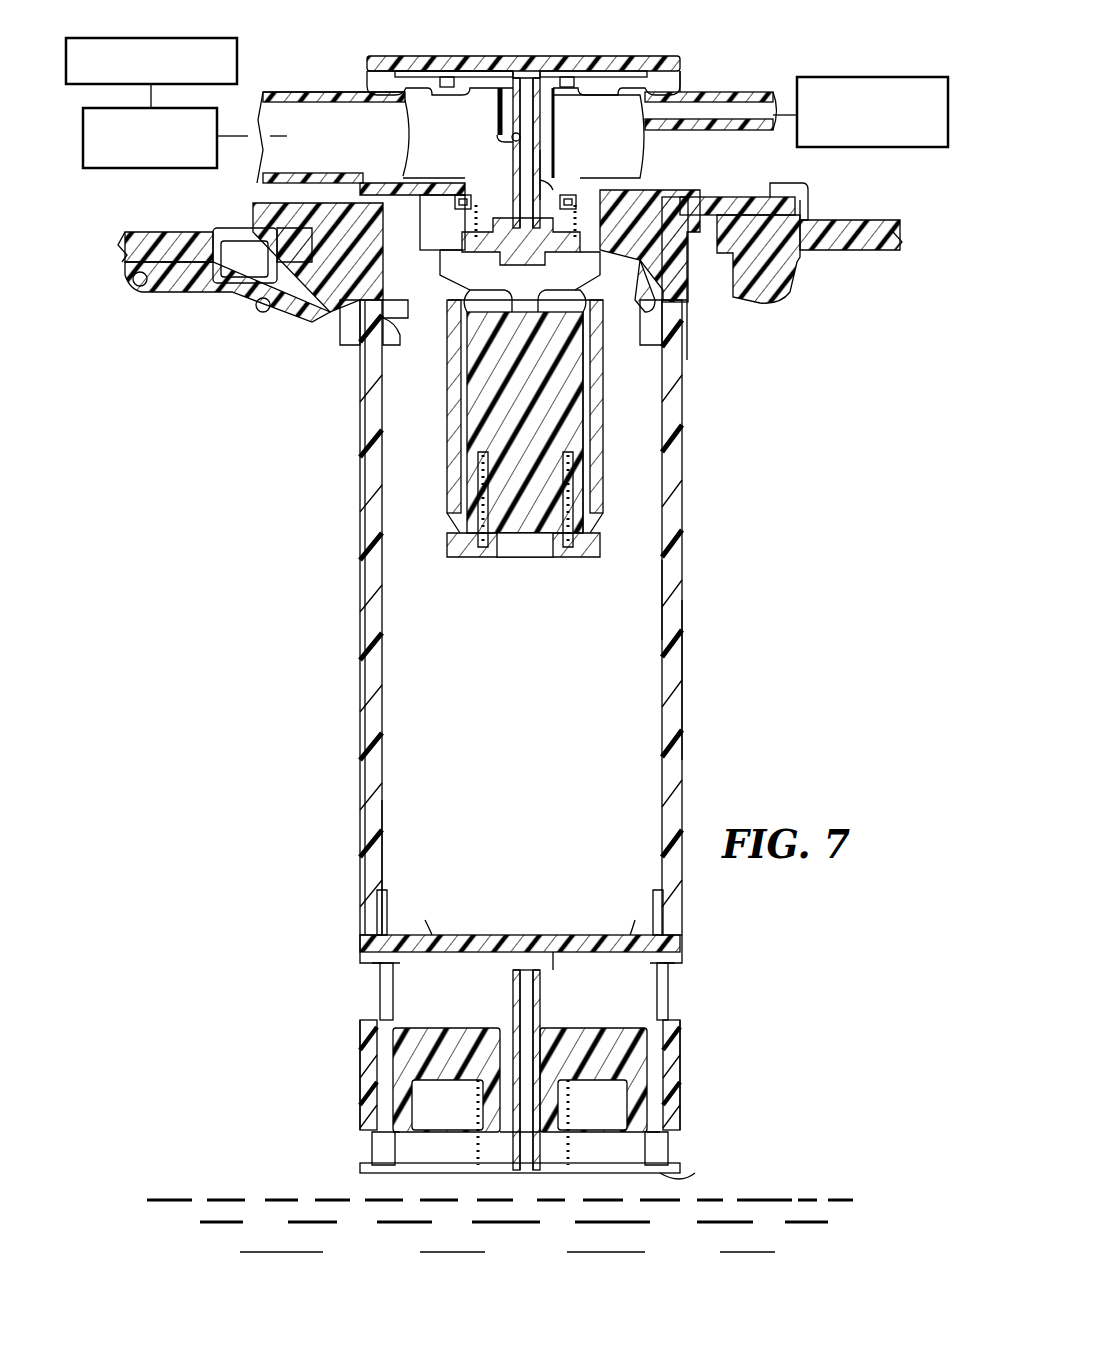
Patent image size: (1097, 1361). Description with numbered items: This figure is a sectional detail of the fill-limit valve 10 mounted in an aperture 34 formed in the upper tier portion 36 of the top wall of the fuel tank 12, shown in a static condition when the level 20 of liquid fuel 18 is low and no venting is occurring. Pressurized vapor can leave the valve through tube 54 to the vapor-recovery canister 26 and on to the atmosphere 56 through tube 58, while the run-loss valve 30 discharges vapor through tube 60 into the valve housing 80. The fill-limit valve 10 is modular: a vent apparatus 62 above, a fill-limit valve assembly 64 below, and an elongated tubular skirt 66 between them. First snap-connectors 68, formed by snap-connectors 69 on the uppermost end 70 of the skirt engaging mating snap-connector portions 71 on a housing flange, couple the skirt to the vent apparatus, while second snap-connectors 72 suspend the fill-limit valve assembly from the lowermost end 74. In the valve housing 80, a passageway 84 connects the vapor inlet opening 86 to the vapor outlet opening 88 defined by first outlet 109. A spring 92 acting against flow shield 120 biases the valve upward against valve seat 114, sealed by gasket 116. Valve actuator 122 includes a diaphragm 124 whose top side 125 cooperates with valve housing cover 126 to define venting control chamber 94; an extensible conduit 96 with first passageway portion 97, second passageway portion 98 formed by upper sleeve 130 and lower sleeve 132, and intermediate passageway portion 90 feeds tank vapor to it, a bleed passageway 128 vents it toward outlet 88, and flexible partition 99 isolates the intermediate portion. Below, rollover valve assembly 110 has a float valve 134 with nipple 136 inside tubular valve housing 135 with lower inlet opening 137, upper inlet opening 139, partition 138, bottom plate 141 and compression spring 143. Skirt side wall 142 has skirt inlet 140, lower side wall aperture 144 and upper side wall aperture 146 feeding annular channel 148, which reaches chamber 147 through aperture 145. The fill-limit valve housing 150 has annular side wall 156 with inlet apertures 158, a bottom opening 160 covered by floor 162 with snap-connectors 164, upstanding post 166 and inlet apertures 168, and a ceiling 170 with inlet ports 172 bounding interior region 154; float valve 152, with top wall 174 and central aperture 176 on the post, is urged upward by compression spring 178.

The fill-limit valve 10 is at (722, 59).
The fuel tank 12 is at (725, 92).
The liquid fuel 18 is at (755, 1220).
The rising level 20 is at (278, 1200).
The vapor-recovery canister 26 is at (115, 162).
The run-loss valve 30 is at (875, 147).
The aperture 34 is at (320, 300).
The upper tier portion 36 is at (177, 228).
The tube 54 is at (240, 128).
The atmosphere 56 is at (205, 40).
The tube 58 is at (152, 96).
The tube 60 is at (787, 116).
The vent apparatus 62 is at (620, 53).
The fill-limit valve assembly 64 is at (715, 1072).
The tubular skirt 66 is at (697, 637).
The first snap-connectors 68 is at (400, 320).
The first snap-connectors 69 is at (385, 330).
The uppermost end 70 is at (685, 345).
The mating snap-connector portions 71 is at (325, 330).
The second snap-connectors 72 is at (387, 894).
The lowermost end 74 is at (683, 870).
The valve housing 80 is at (655, 165).
The passageway 84 is at (453, 56).
The vapor inlet opening 86 is at (576, 195).
The vapor outlet opening 88 is at (327, 104).
The intermediate passageway portion 90 is at (542, 233).
The spring 92 is at (482, 215).
The venting control chamber 94 is at (553, 52).
The extensible conduit 96 is at (556, 155).
The first passageway portion 97 is at (468, 196).
The second passageway portion 98 is at (556, 138).
The flexible partition 99 is at (470, 292).
The first outlet 109 is at (318, 92).
The rollover valve assembly 110 is at (614, 399).
The valve seat 114 is at (612, 195).
The gasket 116 is at (434, 139).
The flow shield 120 is at (396, 300).
The valve actuator 122 is at (488, 108).
The diaphragm 124 is at (420, 71).
The top side 125 is at (570, 72).
The valve housing cover 126 is at (533, 67).
The bleed passageway 128 is at (505, 138).
The upper sleeve 130 is at (548, 108).
The lower sleeve 132 is at (542, 184).
The float valve 134 is at (478, 422).
The tubular valve housing 135 is at (596, 407).
The nipple 136 is at (538, 293).
The lower inlet opening 137 is at (450, 460).
The partition 138 is at (562, 255).
The upper inlet opening 139 is at (470, 252).
The skirt inlet 140 is at (385, 935).
The bottom plate 141 is at (585, 558).
The annular side wall 142 is at (675, 684).
The compression spring 143 is at (570, 493).
The lower side wall aperture 144 is at (360, 870).
The aperture 145 is at (738, 197).
The upper side wall aperture 146 is at (365, 355).
The chamber 147 is at (617, 214).
The annular channel 148 is at (619, 598).
The fill-limit valve housing 150 is at (685, 1040).
The float valve 152 is at (599, 1034).
The interior region 154 is at (565, 967).
The annular side wall 156 is at (358, 1060).
The inlet apertures 158 is at (365, 1018).
The bottom opening 160 is at (357, 1149).
The floor 162 is at (672, 1160).
The snap-connectors 164 is at (372, 1140).
The upstanding post 166 is at (511, 995).
The inlet apertures 168 is at (460, 1162).
The ceiling 170 is at (508, 935).
The inlet ports 172 is at (430, 935).
The top wall 174 is at (470, 1030).
The central aperture 176 is at (543, 1016).
The compression spring 178 is at (480, 1122).